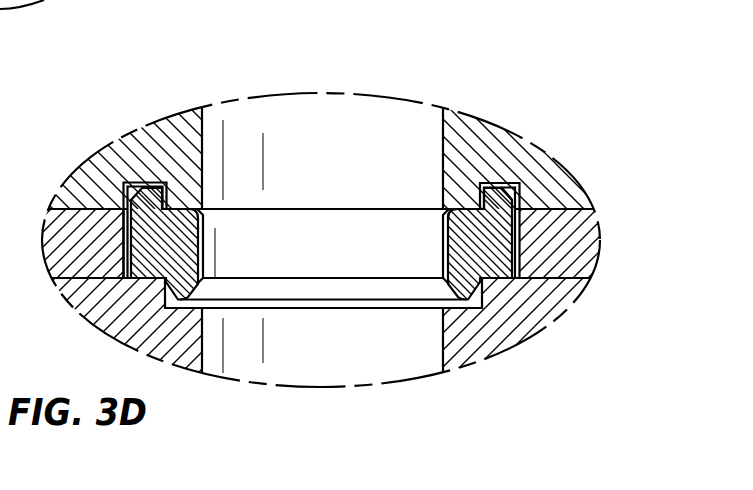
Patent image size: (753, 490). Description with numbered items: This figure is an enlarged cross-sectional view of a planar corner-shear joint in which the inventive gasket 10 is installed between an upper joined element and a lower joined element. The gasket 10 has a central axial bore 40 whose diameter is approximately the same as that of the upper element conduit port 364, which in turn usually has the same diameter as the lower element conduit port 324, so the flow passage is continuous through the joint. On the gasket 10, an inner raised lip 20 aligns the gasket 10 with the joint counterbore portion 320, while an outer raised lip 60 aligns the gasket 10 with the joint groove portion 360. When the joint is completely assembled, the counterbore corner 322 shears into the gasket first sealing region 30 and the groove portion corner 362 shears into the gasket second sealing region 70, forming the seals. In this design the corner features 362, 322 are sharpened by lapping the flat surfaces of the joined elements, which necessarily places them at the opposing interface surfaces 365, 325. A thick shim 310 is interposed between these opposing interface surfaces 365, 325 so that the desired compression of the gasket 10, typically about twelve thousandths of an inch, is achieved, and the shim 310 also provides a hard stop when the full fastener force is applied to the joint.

The gasket 10 is at (309, 264).
The inner raised lip 20 is at (461, 298).
The first sealing region 30 is at (492, 273).
The central axial bore 40 is at (397, 253).
The outer raised lip 60 is at (500, 190).
The second sealing region 70 is at (467, 207).
The shim 310 is at (588, 236).
The joint counterbore portion 320 is at (487, 282).
The counterbore corner 322 is at (483, 280).
The lower element conduit port 324 is at (202, 345).
The interface surface 325 is at (540, 280).
The joint groove portion 360 is at (515, 203).
The groove portion corner 362 is at (480, 205).
The upper element conduit port 364 is at (203, 142).
The interface surface 365 is at (555, 200).